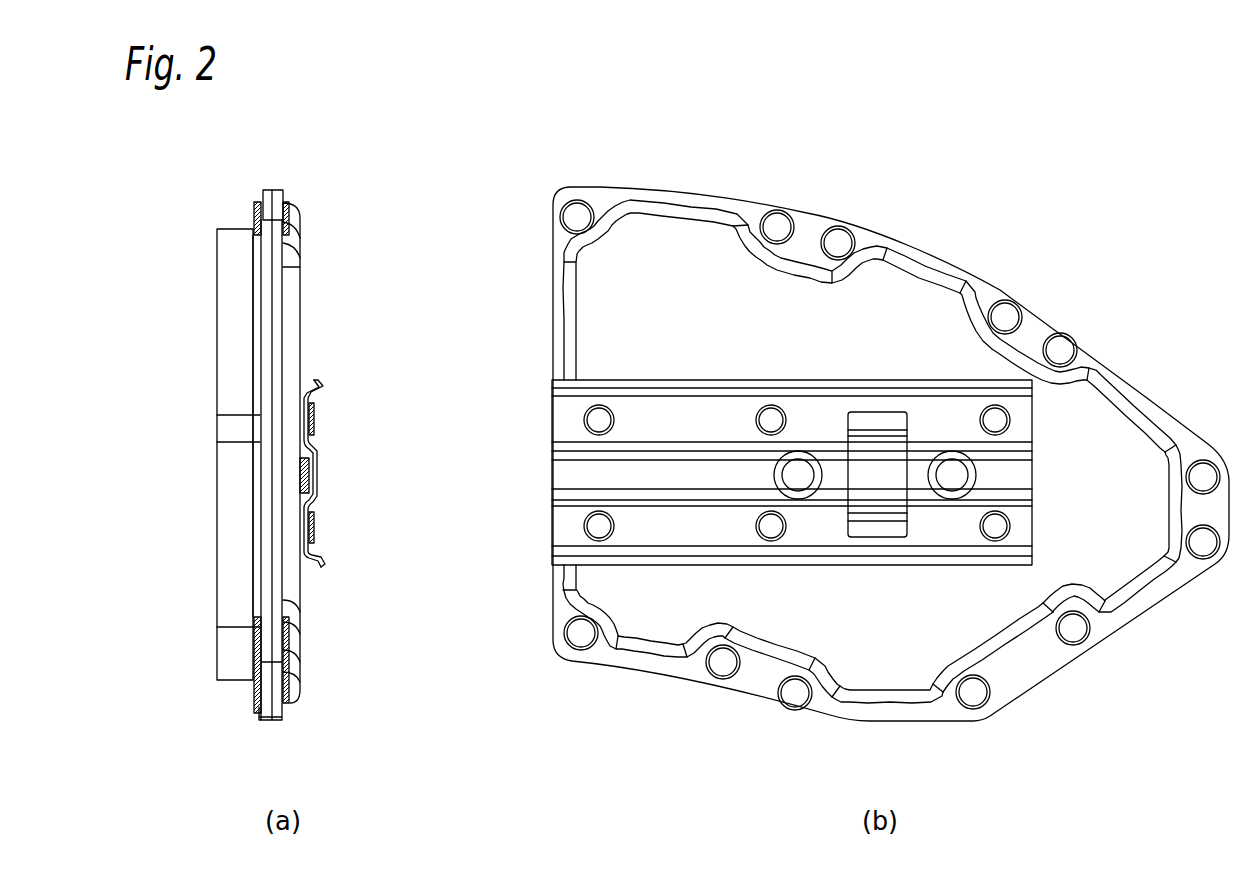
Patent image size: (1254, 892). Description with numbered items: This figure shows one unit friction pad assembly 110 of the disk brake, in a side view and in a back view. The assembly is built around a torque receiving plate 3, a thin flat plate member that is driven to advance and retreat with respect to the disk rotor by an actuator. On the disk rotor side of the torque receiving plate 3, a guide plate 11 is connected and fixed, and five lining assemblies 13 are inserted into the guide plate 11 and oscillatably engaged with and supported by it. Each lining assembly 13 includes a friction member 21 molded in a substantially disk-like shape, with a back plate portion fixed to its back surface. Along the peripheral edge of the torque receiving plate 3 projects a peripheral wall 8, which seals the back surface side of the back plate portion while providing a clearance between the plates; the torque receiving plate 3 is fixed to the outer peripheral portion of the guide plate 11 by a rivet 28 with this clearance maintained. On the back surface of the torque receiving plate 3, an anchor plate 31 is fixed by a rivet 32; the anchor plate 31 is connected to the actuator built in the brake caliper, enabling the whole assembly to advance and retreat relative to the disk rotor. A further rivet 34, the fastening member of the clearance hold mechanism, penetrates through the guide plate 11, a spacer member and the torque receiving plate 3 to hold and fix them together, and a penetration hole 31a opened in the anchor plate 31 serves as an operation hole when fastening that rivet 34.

The friction pad assembly 110 is at (285, 172).
The guide plate 11 is at (255, 180).
The peripheral wall 8 is at (292, 233).
The torque receiving plate 3 is at (312, 277).
The lining assembly 13 is at (204, 264).
The friction member 21 is at (230, 320).
The anchor plate 31 is at (328, 376).
The rivet 32 is at (316, 418).
The rivet 34 is at (950, 478).
The penetration hole 31a is at (800, 470).
The rivet 28 is at (291, 690).